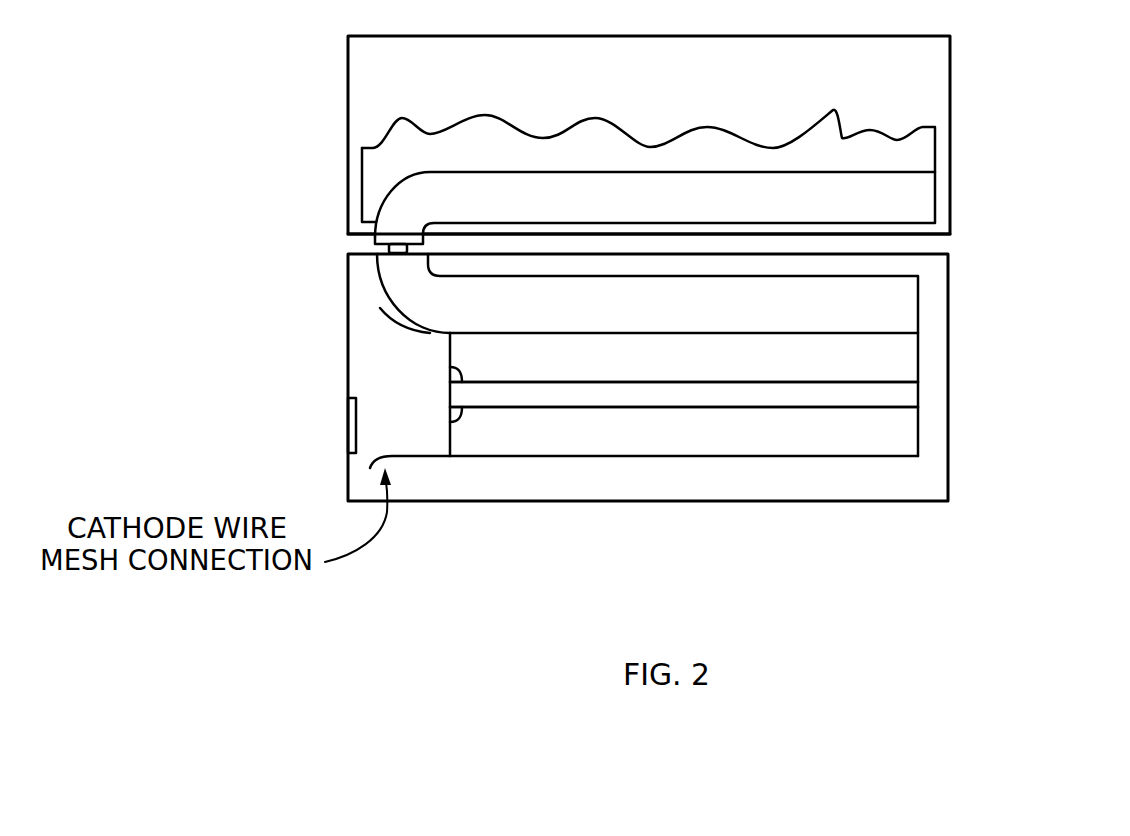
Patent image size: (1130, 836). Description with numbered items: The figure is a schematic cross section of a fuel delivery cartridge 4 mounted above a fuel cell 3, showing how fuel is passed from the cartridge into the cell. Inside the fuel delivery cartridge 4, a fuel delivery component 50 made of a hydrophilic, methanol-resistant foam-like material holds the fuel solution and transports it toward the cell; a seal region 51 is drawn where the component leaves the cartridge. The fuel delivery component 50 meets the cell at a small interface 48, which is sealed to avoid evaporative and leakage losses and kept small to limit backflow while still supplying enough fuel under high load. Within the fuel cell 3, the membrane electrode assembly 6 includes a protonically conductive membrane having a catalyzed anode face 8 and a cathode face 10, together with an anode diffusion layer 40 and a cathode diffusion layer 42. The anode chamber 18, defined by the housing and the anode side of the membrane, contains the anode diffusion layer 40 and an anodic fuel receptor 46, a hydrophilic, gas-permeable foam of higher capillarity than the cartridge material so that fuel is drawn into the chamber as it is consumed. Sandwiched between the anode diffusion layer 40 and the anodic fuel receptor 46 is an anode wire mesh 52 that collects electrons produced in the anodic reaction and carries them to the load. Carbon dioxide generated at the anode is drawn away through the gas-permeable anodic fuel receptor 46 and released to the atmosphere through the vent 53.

The fuel delivery cartridge 4 is at (308, 75).
The fuel cell 3 is at (1058, 341).
The fuel delivery component 50 is at (930, 203).
The cartridge outlet seal 51 is at (374, 242).
The interface 48 is at (388, 249).
The anodic fuel receptor 46 is at (903, 303).
The anode chamber 18 is at (347, 264).
The anode wire mesh 52 is at (386, 340).
The vent 53 is at (347, 422).
The anode face 8 is at (450, 371).
The cathode face 10 is at (450, 418).
The anode diffusion layer 40 is at (730, 375).
The cathode diffusion layer 42 is at (748, 447).
The membrane electrode assembly 6 is at (902, 397).